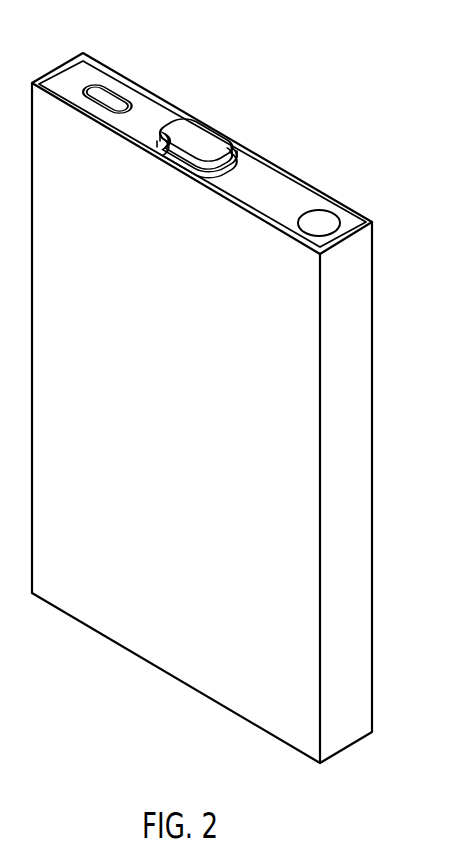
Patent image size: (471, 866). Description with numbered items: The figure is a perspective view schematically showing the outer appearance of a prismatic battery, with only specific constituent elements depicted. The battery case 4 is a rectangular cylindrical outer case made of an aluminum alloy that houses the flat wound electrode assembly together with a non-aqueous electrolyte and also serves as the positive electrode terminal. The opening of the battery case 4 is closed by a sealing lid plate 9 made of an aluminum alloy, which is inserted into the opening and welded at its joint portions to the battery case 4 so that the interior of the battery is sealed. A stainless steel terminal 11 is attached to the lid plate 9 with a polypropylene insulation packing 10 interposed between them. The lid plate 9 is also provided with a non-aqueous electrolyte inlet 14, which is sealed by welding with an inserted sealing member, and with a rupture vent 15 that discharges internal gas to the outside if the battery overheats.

The battery case 4 is at (363, 442).
The sealing lid plate 9 is at (148, 112).
The insulation packing 10 is at (257, 175).
The terminal 11 is at (207, 137).
The non-aqueous electrolyte inlet 14 is at (320, 222).
The rupture vent 15 is at (107, 97).